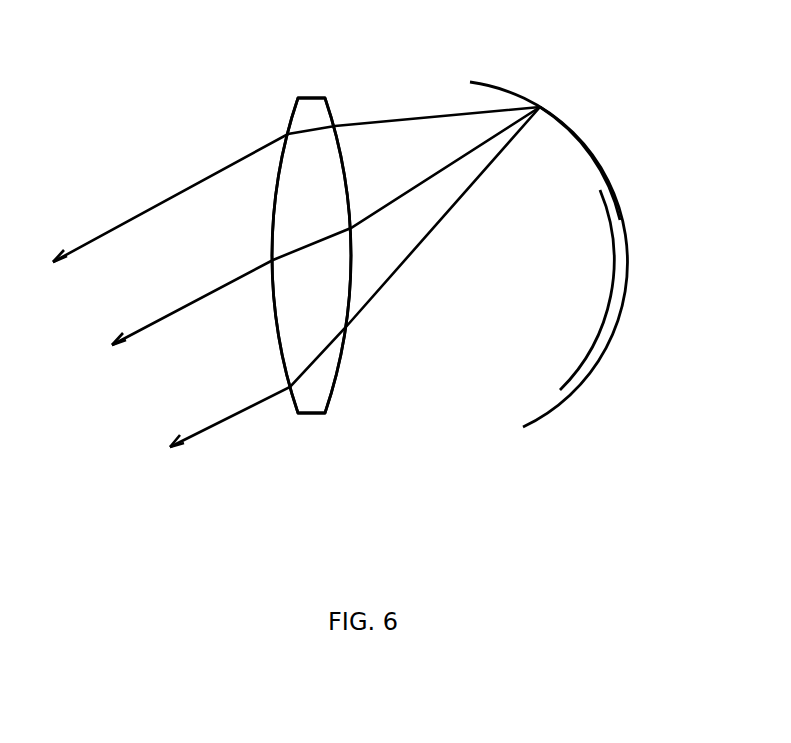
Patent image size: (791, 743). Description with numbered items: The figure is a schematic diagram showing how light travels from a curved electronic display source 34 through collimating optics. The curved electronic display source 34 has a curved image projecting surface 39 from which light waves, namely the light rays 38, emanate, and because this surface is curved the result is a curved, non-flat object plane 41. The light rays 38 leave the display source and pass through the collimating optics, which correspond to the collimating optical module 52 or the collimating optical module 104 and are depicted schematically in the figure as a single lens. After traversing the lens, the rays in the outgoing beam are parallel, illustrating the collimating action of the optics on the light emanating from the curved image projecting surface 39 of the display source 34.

The collimating optical module 52 is at (305, 90).
The collimating optical module 104 is at (311, 255).
The curved electronic display source 34 is at (612, 147).
The light rays 38 is at (507, 185).
The curved image projecting surface 39 is at (627, 243).
The curved object plane 41 is at (595, 168).